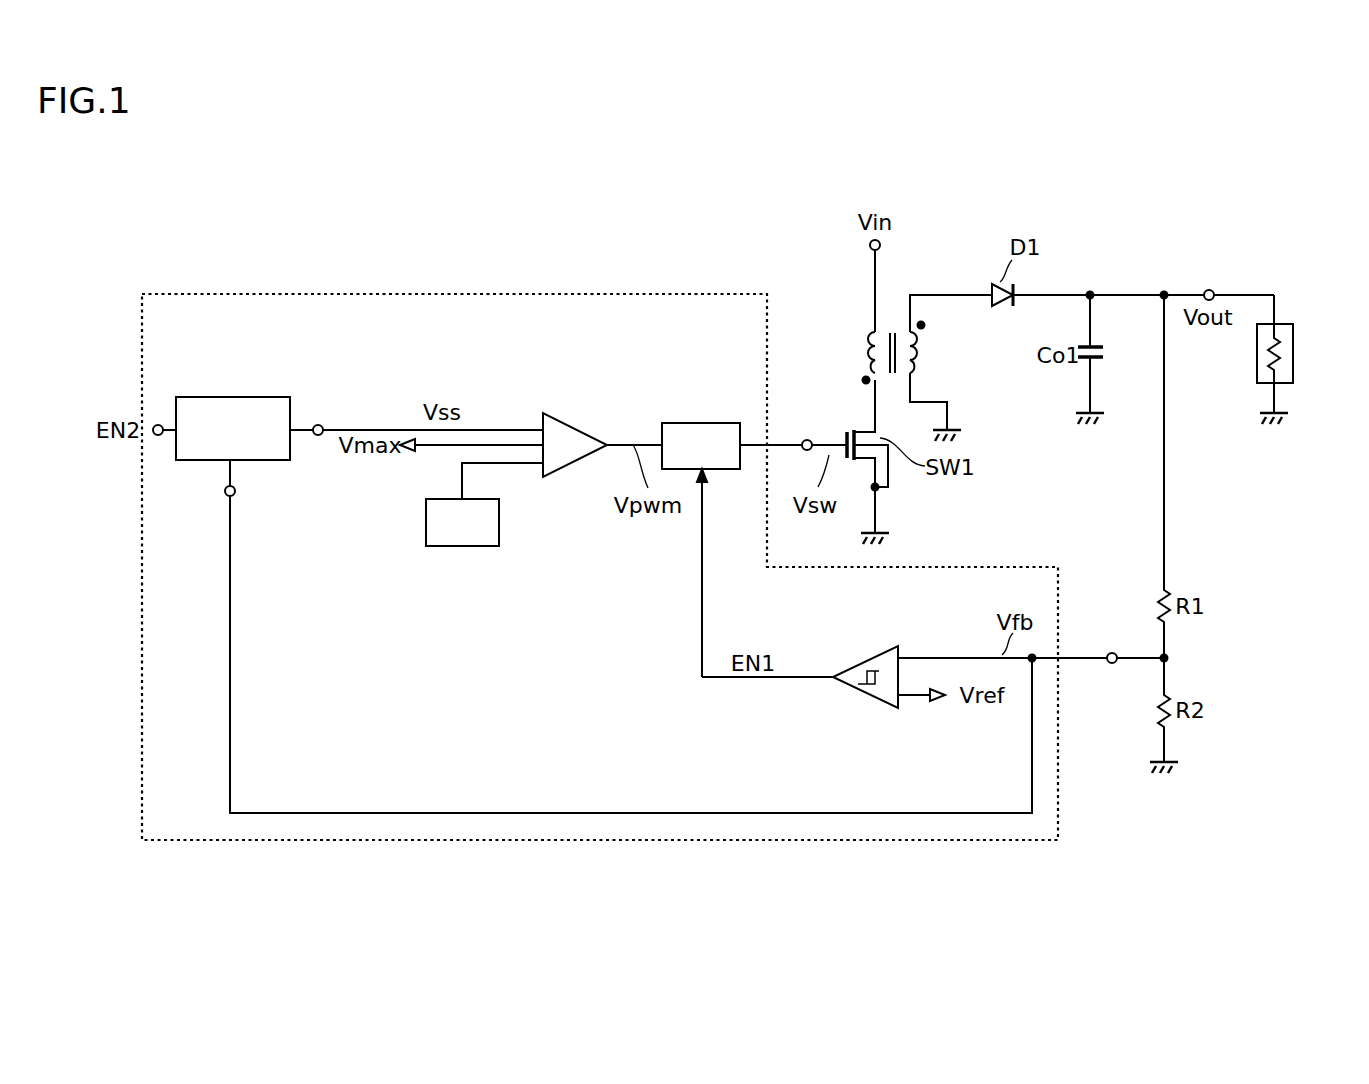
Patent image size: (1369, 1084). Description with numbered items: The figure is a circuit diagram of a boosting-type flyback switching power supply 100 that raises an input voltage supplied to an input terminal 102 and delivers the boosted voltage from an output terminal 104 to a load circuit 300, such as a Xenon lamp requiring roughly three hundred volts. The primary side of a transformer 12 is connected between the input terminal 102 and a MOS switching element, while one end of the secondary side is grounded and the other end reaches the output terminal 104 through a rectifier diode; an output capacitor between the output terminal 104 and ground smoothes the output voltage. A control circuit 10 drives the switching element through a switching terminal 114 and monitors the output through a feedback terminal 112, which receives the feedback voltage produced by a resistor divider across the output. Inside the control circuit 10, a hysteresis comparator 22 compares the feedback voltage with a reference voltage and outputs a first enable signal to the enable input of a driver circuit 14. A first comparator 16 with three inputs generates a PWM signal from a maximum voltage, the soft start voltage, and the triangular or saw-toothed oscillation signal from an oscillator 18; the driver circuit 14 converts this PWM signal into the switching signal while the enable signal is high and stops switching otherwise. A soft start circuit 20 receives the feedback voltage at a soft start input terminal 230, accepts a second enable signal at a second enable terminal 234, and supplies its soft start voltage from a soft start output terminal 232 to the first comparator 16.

The control circuit 10 is at (458, 293).
The transformer 12 is at (867, 355).
The driver circuit 14 is at (700, 423).
The first comparator 16 is at (583, 421).
The oscillator 18 is at (499, 522).
The soft start circuit 20 is at (232, 397).
The hysteresis comparator 22 is at (868, 655).
The switching power supply 100 is at (754, 918).
The input terminal 102 is at (881, 245).
The output terminal 104 is at (1213, 284).
The feedback terminal 112 is at (1110, 667).
The switching terminal 114 is at (808, 432).
The soft start input terminal 230 is at (235, 491).
The soft start output terminal 232 is at (322, 421).
The second enable terminal 234 is at (160, 421).
The load circuit 300 is at (1293, 350).